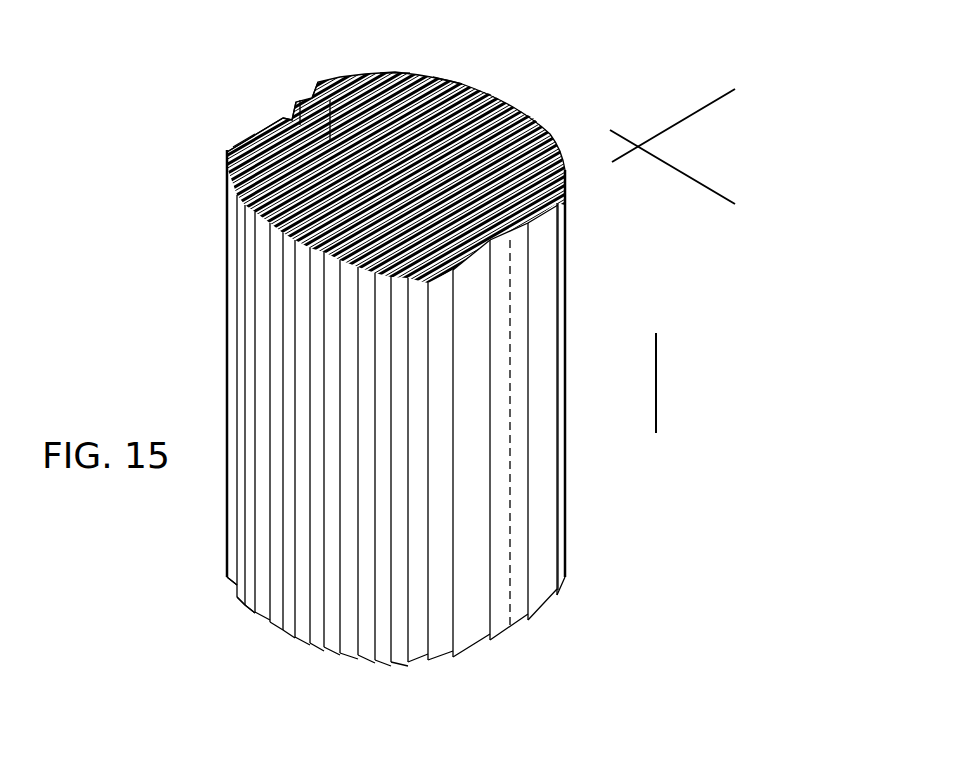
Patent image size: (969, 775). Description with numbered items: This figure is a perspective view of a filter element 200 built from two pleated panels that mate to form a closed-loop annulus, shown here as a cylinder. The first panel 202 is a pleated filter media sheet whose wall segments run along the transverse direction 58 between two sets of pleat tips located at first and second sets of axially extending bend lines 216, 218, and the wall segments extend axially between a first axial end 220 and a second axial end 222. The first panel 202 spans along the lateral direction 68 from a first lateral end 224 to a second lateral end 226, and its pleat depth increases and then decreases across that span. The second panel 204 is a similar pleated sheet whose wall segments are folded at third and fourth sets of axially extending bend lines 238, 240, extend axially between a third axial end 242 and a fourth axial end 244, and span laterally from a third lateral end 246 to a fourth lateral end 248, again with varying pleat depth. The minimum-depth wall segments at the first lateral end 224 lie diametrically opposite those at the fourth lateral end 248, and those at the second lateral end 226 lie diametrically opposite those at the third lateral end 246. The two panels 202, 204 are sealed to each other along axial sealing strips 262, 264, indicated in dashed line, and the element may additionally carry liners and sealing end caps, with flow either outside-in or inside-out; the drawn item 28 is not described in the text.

The filter element 200 is at (158, 172).
The first panel 202 is at (328, 76).
The second panel 204 is at (238, 126).
The first set of axially extending bend lines 216 is at (296, 102).
The second set of axially extending bend lines 218 is at (395, 75).
The first axial end 220 is at (448, 78).
The second axial end 222 is at (558, 578).
The first lateral end 224 is at (318, 83).
The second lateral end 226 is at (537, 215).
The third set of axially extending bend lines 238 is at (520, 228).
The fourth set of axially extending bend lines 240 is at (430, 358).
The third axial end 242 is at (250, 192).
The fourth axial end 244 is at (262, 618).
The third lateral end 246 is at (245, 128).
The fourth lateral end 248 is at (480, 252).
The axial sealing strip 262 is at (515, 470).
The axial sealing strip 264 is at (280, 112).
The transverse direction 58 is at (700, 107).
The lateral direction 68 is at (693, 177).
The axis reference 28 is at (657, 382).